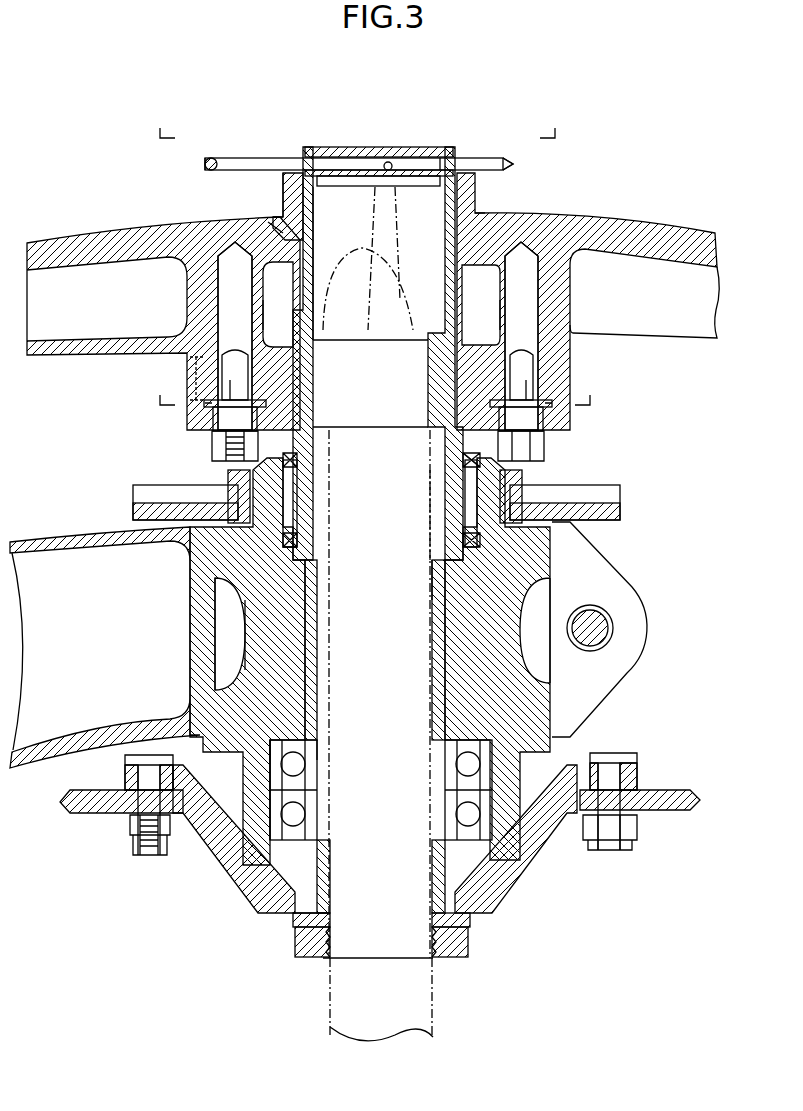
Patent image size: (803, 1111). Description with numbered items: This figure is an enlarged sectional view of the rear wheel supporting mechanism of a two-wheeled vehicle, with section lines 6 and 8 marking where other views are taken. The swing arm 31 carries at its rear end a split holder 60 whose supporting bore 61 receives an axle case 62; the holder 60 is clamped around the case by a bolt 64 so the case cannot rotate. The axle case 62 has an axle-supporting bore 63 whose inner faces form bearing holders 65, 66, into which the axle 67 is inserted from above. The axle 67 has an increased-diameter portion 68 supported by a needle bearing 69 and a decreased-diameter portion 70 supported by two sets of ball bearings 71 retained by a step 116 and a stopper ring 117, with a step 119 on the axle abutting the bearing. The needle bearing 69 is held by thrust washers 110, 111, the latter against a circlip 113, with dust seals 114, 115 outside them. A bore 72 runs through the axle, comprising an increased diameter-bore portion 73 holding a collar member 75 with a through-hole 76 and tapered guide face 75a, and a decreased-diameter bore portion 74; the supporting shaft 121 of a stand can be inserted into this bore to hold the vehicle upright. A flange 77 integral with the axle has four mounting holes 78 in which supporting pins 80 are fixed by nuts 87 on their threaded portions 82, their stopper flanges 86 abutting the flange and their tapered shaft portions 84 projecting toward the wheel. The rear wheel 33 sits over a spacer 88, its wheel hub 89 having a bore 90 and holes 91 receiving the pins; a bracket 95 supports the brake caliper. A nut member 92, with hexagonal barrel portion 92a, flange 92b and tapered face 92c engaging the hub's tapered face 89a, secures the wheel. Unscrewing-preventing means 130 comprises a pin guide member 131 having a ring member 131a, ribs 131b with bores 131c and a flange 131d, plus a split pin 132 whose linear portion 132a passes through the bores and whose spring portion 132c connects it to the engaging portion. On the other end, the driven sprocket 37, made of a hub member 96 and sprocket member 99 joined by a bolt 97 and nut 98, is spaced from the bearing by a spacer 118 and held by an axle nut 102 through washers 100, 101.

The swing arm 31 is at (61, 532).
The rear wheel 33 is at (76, 236).
The driven sprocket 37 is at (109, 817).
The holder 60 is at (648, 593).
The supporting bore 61 is at (216, 566).
The axle case 62 is at (546, 553).
The axle-supporting bore 63 is at (548, 706).
The bolt 64 is at (600, 629).
The bearing holder 65 is at (430, 523).
The bearing holder 66 is at (433, 753).
The axle 67 is at (246, 646).
The increased-diameter portion 68 is at (446, 488).
The needle bearing 69 is at (290, 522).
The decreased-diameter portion 70 is at (306, 772).
The ball bearings 71 is at (300, 812).
The bore 72 is at (326, 212).
The increased diameter-bore portion 73 is at (233, 618).
The decreased-diameter bore portion 74 is at (345, 932).
The collar member 75 is at (312, 298).
The tapered guide face 75a is at (343, 330).
The through-hole 76 is at (428, 383).
The flange 77 is at (553, 405).
The mounting holes 78 is at (212, 432).
The supporting pin 80 is at (238, 352).
The threaded portion 82 is at (235, 472).
The shaft portion 84 is at (237, 398).
The stopper flange 86 is at (208, 404).
The nut 87 is at (214, 452).
The spacer 88 is at (288, 342).
The wheel hub 89 is at (562, 230).
The tapered face 89a is at (483, 213).
The bore 90 is at (471, 335).
The holes 91 is at (224, 274).
The nut member 92 is at (283, 196).
The hexagonal barrel portion 92a is at (296, 185).
The flange 92b is at (278, 226).
The tapered face 92c is at (268, 228).
The bracket 95 is at (600, 498).
The hub member 96 is at (533, 842).
The bolt 97 is at (627, 782).
The nut 98 is at (172, 850).
The sprocket member 99 is at (668, 812).
The washer 100 is at (482, 917).
The washer 101 is at (468, 946).
The axle nut 102 is at (455, 948).
The thrust washer 110 is at (293, 538).
The thrust washer 111 is at (291, 482).
The circlip 113 is at (460, 457).
The dust seal 114 is at (447, 586).
The dust seal 115 is at (292, 461).
The step 116 is at (285, 746).
The stopper ring 117 is at (250, 876).
The spacer 118 is at (300, 908).
The step 119 is at (320, 760).
The supporting shaft 121 is at (331, 1031).
The unscrewing-preventing means 130 is at (517, 166).
The pin guide member 131 is at (327, 145).
The ring member 131a is at (416, 188).
The ribs 131b is at (436, 170).
The bore 131c is at (387, 170).
The flange 131d is at (392, 162).
The split pin 132 is at (237, 155).
The linear portion 132a is at (452, 165).
The spring portion 132c is at (205, 165).
The section line 6- 6 is at (377, 386).
The section line 8- 8 is at (347, 128).